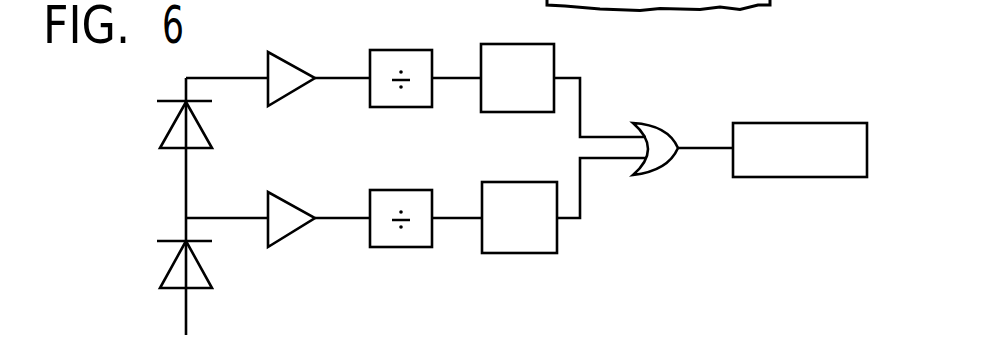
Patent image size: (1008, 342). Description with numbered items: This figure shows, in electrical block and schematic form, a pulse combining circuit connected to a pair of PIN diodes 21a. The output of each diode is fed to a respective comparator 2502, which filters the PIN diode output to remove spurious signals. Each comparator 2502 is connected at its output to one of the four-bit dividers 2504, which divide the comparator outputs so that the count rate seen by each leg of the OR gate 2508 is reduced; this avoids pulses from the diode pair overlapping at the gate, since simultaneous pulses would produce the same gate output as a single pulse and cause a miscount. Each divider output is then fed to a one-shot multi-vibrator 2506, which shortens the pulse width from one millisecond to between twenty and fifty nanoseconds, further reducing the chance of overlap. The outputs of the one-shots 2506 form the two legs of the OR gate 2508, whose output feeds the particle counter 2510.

The PIN diodes 21a is at (167, 268).
The comparator 2502 is at (292, 93).
The four-bit dividers 2504 is at (428, 108).
The one-shot multi-vibrator 2506 is at (541, 113).
The OR gate 2508 is at (651, 122).
The particle counter 2510 is at (793, 122).